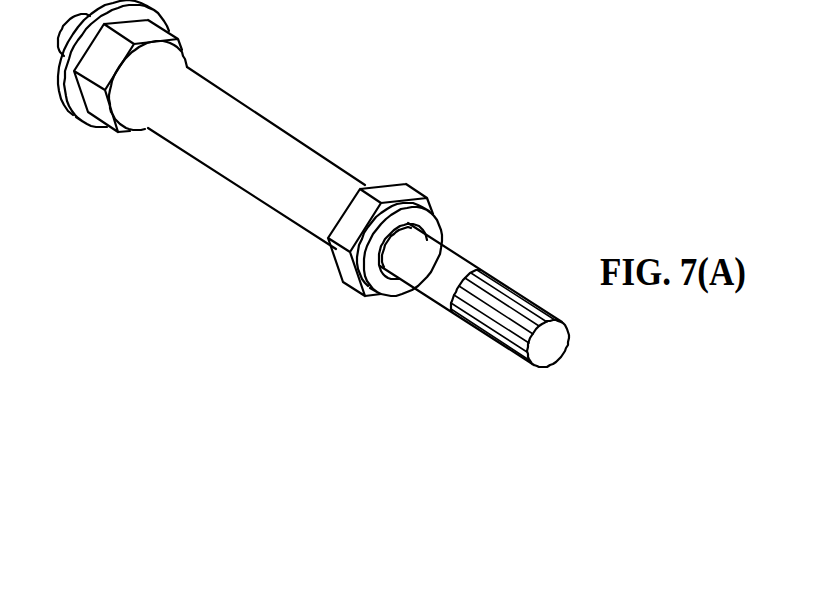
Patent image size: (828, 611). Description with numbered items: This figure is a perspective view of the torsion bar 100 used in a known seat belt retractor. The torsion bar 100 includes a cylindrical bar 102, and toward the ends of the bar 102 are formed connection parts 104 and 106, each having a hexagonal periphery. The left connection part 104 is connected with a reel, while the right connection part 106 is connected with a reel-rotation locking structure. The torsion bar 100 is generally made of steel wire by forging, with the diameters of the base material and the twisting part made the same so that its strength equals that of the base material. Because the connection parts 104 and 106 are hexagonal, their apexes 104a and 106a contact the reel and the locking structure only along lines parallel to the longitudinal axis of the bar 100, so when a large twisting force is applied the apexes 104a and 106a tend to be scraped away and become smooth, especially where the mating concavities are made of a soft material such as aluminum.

The torsion bar 100 is at (313, 186).
The cylindrical bar 102 is at (240, 128).
The connection part 104 is at (181, 125).
The apex 104a is at (84, 138).
The connection part 106 is at (416, 271).
The apex 106a is at (345, 286).